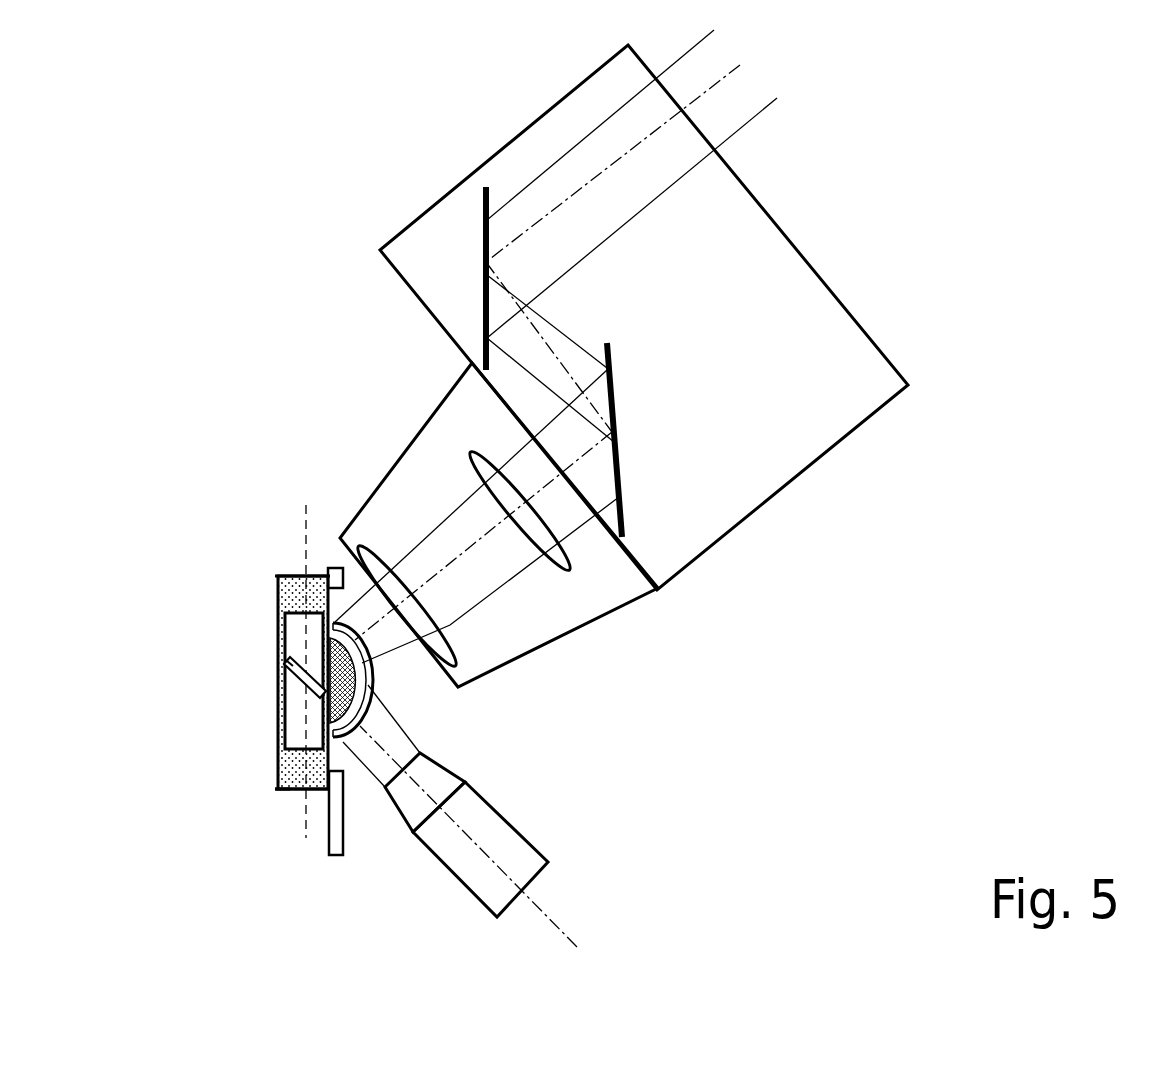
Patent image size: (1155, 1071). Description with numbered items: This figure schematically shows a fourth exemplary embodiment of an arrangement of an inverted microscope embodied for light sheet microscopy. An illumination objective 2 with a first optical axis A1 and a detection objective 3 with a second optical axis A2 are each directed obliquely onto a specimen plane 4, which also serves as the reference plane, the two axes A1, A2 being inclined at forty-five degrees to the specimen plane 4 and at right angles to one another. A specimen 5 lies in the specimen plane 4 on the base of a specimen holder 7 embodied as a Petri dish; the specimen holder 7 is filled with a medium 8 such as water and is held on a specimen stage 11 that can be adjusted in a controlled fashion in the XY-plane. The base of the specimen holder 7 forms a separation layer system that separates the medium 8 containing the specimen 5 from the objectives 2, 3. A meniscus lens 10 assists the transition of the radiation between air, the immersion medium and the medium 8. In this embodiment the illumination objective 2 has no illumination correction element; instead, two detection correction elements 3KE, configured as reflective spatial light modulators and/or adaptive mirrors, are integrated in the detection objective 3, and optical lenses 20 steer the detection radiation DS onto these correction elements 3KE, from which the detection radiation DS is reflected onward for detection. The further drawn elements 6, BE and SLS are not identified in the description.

The illumination objective 2 is at (485, 795).
The detection objective 3 is at (827, 455).
The specimen plane 4 is at (305, 548).
The specimen 5 is at (297, 633).
The mirror 6 is at (292, 678).
The specimen holder 7 is at (297, 790).
The medium 8 is at (278, 783).
The meniscus lens 10 is at (372, 675).
The specimen stage 11 is at (347, 825).
The optical lenses 20 is at (457, 660).
The detection correction element 3KE is at (487, 252).
The detection radiation DS is at (690, 55).
The first optical axis A1 is at (527, 895).
The second optical axis A2 is at (473, 545).
The illumination element BE is at (287, 664).
The scattered light window SLS is at (337, 748).